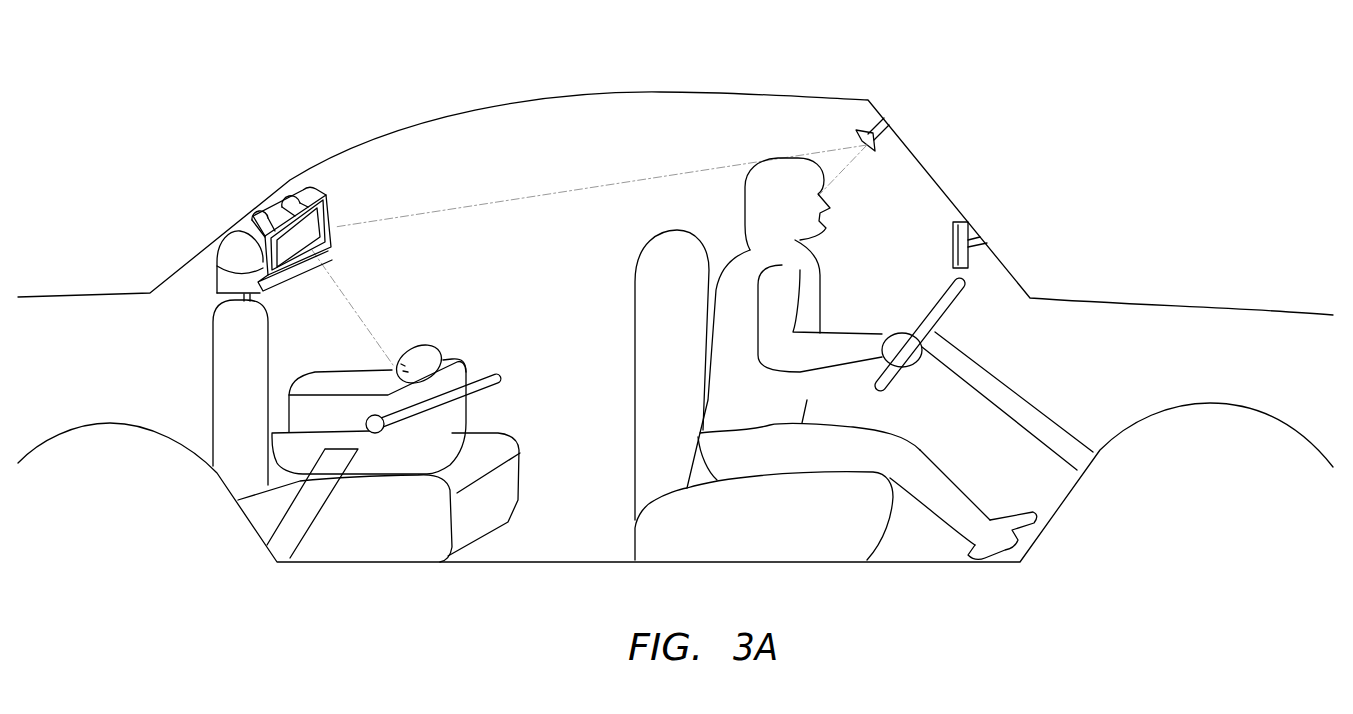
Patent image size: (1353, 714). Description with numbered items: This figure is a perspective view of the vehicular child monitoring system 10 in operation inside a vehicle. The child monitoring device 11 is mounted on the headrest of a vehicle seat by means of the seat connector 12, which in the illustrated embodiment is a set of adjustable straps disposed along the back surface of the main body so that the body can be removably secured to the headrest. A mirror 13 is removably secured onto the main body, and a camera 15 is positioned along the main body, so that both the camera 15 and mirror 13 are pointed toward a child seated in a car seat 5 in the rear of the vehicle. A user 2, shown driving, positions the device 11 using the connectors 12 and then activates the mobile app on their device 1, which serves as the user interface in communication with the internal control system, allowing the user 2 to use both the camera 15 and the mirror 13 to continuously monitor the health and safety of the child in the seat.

The vehicular child monitoring system 10 is at (177, 95).
The child monitoring device 11 is at (302, 196).
The seat connector 12 is at (218, 257).
The mirror 13 is at (332, 242).
The camera 15 is at (297, 205).
The infant car seat 5 is at (430, 337).
The user 2 is at (823, 280).
The user interface 1 is at (958, 233).